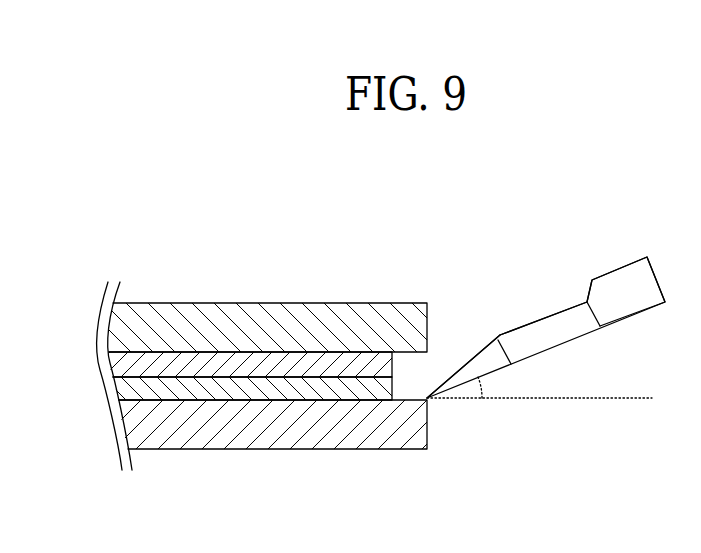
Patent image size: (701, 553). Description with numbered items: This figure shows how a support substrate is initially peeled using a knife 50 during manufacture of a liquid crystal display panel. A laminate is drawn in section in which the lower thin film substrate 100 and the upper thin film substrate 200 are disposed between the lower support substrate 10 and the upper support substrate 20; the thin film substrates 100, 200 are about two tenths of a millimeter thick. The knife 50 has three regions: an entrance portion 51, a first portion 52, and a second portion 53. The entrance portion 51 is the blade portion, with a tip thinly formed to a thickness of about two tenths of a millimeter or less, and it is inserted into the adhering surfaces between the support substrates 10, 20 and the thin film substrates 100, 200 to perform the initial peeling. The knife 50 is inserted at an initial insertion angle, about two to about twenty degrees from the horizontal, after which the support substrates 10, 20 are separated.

The lower support substrate 10 is at (360, 427).
The upper support substrate 20 is at (320, 320).
The lower thin film substrate 100 is at (245, 386).
The upper thin film substrate 200 is at (205, 352).
The knife 50 is at (546, 292).
The entrance portion 51 is at (485, 348).
The first portion 52 is at (548, 327).
The second portion 53 is at (628, 307).